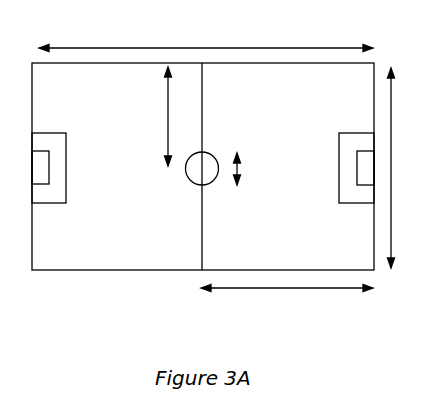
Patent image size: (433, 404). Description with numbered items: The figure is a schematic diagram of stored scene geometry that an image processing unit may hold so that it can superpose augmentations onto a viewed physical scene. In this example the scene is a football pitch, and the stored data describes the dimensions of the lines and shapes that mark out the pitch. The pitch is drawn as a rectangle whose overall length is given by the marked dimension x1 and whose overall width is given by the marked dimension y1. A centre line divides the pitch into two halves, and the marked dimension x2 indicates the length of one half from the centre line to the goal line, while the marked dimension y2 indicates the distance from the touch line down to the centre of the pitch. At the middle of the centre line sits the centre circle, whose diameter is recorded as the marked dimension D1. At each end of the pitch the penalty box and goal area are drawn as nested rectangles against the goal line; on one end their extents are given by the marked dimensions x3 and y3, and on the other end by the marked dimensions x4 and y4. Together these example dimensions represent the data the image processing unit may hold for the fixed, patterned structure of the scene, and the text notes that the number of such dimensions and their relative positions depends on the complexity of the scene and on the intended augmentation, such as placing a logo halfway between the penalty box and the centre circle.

The marked dimension x1 is at (206, 34).
The marked dimension y1 is at (404, 168).
The marked dimension x2 is at (287, 301).
The marked dimension y2 is at (157, 116).
The marked dimension D1 is at (254, 169).
The marked dimension x3 is at (356, 126).
The marked dimension y3 is at (331, 190).
The marked dimension x4 is at (39, 142).
The marked dimension y4 is at (56, 169).